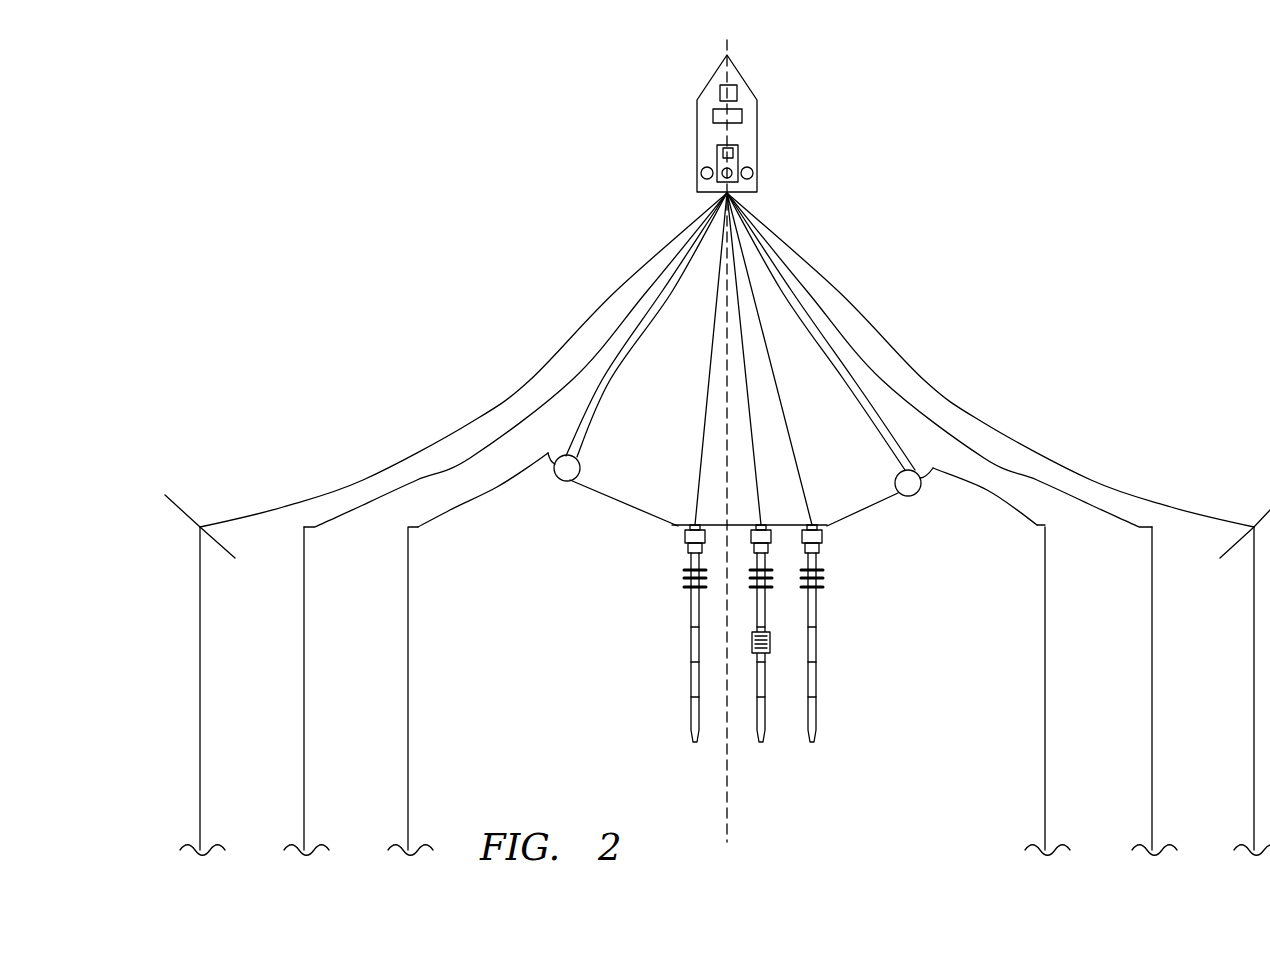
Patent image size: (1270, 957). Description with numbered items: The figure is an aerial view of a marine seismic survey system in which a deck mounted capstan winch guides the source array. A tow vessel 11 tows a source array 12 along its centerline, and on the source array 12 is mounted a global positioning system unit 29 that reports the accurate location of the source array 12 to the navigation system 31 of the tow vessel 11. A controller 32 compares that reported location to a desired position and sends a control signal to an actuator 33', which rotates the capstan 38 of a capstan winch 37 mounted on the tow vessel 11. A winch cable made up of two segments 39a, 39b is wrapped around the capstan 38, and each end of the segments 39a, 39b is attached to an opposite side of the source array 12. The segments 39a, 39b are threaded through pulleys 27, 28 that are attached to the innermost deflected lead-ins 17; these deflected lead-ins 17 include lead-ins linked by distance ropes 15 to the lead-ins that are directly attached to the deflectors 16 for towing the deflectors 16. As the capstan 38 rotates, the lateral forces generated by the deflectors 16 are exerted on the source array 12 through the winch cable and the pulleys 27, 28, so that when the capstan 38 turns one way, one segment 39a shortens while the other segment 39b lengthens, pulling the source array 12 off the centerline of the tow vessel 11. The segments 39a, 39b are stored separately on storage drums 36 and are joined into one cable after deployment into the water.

The tow vessel 11 is at (709, 80).
The source array 12 is at (720, 766).
The distance ropes 15 is at (363, 506).
The deflectors 16 is at (175, 500).
The deflected lead-ins 17 is at (512, 470).
The pulley 27 is at (580, 461).
The pulley 28 is at (896, 476).
The global positioning system (GPS) unit 29 is at (770, 645).
The navigation system 31 is at (737, 92).
The controller 32 is at (742, 112).
The actuator 33' is at (763, 144).
The storage drums 36 is at (700, 173).
The capstan winch 37 is at (710, 158).
The capstan 38 is at (733, 170).
The winch cable segment 39a is at (695, 212).
The winch cable segment 39b is at (760, 212).